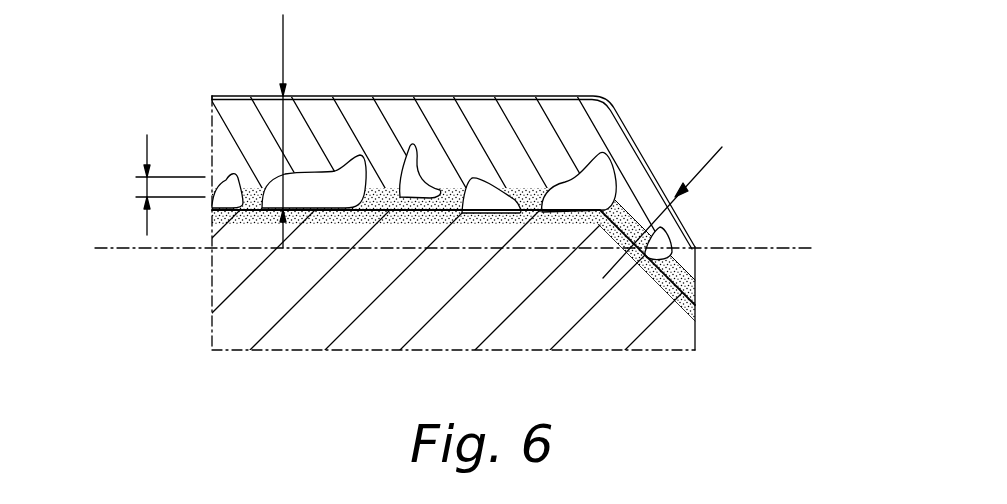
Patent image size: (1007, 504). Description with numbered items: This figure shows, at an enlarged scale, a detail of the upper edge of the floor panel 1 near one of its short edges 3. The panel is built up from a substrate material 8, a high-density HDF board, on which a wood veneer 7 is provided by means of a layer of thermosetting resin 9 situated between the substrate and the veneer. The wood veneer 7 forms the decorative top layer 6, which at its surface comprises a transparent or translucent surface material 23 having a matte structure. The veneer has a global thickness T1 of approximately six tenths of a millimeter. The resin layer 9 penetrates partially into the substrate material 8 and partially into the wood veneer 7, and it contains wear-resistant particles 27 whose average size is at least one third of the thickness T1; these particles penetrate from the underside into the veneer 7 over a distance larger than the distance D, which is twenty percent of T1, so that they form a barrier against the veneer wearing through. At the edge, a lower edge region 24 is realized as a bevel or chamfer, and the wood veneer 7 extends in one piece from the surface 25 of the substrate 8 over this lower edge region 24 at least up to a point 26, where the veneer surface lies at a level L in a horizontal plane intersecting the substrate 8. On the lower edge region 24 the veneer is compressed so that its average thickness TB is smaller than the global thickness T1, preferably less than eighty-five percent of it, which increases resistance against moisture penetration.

The floor panel 1 is at (657, 83).
The short edge 3 is at (752, 218).
The decorative top layer 6 is at (347, 96).
The wood veneer 7 is at (227, 147).
The substrate material 8 is at (388, 307).
The layer of thermosetting resin 9 is at (466, 188).
The transparent or translucent surface material 23 is at (418, 97).
The lower edge region 24 is at (733, 120).
The surface of the substrate 25 is at (560, 184).
The point 26 is at (695, 252).
The wear-resistant particles 27 is at (318, 200).
The average thickness of the wood veneer on the lower edge regions TB is at (690, 182).
The thickness of the wood veneer T1 is at (283, 33).
The distance D is at (147, 140).
The level L is at (133, 248).